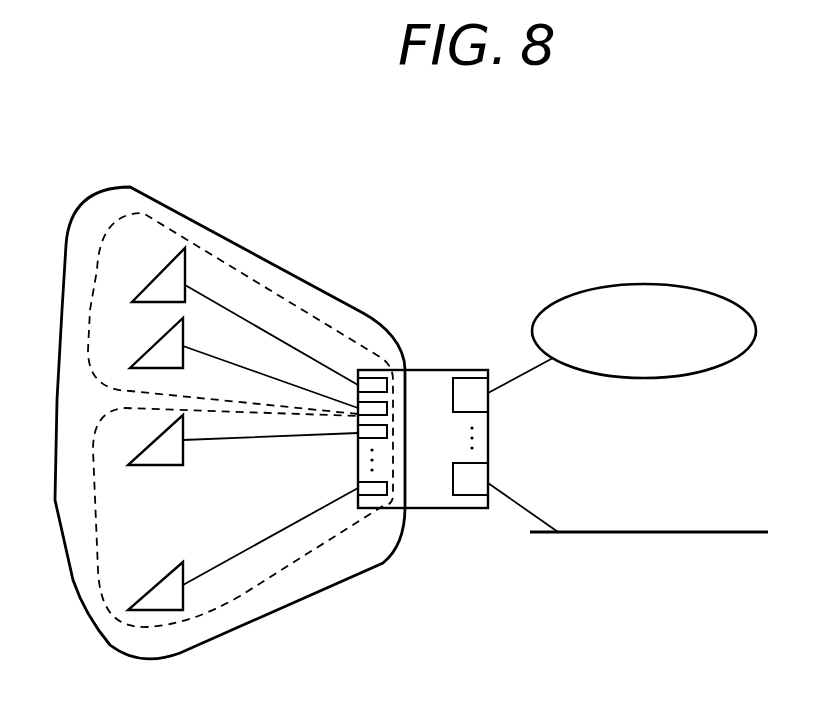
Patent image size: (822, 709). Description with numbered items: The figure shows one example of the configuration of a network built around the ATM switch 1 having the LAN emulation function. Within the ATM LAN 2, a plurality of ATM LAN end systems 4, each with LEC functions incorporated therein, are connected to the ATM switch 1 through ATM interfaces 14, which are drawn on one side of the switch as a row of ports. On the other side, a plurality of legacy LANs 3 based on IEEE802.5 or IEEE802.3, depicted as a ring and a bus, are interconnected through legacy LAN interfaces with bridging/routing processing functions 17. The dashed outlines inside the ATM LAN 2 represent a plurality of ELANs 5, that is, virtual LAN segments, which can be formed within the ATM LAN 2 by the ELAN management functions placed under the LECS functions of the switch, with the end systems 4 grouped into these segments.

The ATM switch 1 is at (430, 370).
The ATM LAN 2 is at (140, 187).
The legacy LAN 3 is at (710, 293).
The ATM LAN end system 4 is at (187, 254).
The ELAN 5 is at (273, 262).
The ATM interface 14 is at (377, 378).
The legacy LAN interface with bridging/routing processing functions 17 is at (470, 385).